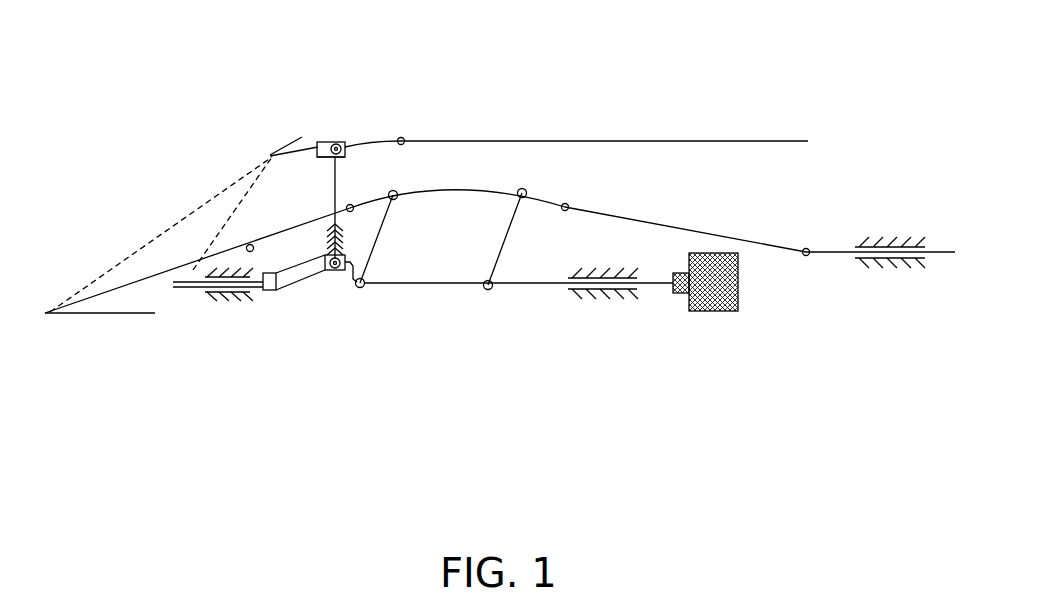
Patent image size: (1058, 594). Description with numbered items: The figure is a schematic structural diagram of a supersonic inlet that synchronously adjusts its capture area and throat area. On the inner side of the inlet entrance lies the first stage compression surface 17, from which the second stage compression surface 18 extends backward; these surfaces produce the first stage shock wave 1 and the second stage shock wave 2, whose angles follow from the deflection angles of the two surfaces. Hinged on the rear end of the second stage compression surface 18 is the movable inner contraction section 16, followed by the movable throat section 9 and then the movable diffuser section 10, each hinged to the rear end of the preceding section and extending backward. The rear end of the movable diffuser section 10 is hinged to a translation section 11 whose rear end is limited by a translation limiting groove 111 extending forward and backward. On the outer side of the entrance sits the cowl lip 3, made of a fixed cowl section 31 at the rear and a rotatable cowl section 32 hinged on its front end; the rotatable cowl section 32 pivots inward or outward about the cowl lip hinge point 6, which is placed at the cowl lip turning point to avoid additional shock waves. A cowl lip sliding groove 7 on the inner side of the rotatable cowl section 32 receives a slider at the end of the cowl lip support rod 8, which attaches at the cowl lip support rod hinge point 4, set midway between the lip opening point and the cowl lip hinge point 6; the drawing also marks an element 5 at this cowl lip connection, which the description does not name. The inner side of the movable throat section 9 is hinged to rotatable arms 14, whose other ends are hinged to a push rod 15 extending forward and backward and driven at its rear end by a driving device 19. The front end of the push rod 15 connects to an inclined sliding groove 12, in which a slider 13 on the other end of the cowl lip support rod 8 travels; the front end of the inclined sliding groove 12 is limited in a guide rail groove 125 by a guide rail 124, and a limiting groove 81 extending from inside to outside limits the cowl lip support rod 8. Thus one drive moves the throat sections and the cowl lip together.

The first stage shock wave 1 is at (137, 249).
The second stage shock wave 2 is at (215, 238).
The cowl lip 3 is at (282, 143).
The cowl lip support rod hinge point 4 is at (320, 140).
The upper pulley 5 is at (340, 142).
The cowl lip hinge point 6 is at (401, 137).
The cowl lip sliding groove 7 is at (316, 157).
The cowl lip support rod 8 is at (333, 172).
The limiting groove 81 is at (332, 268).
The movable throat section 9 is at (430, 187).
The movable diffuser section 10 is at (658, 220).
The translation section 11 is at (838, 250).
The translation limiting groove 111 is at (903, 248).
The inclined sliding groove 12 is at (267, 292).
The guide rail 124 is at (203, 287).
The guide rail groove 125 is at (243, 292).
The slider 13 is at (330, 272).
The rotatable arm 14 is at (503, 238).
The push rod 15 is at (535, 287).
The movable inner contraction section 16 is at (272, 236).
The first stage compression surface 17 is at (150, 280).
The second stage compression surface 18 is at (217, 283).
The driving device 19 is at (690, 310).
The fixed cowl section 31 is at (490, 140).
The rotatable cowl section 32 is at (365, 142).